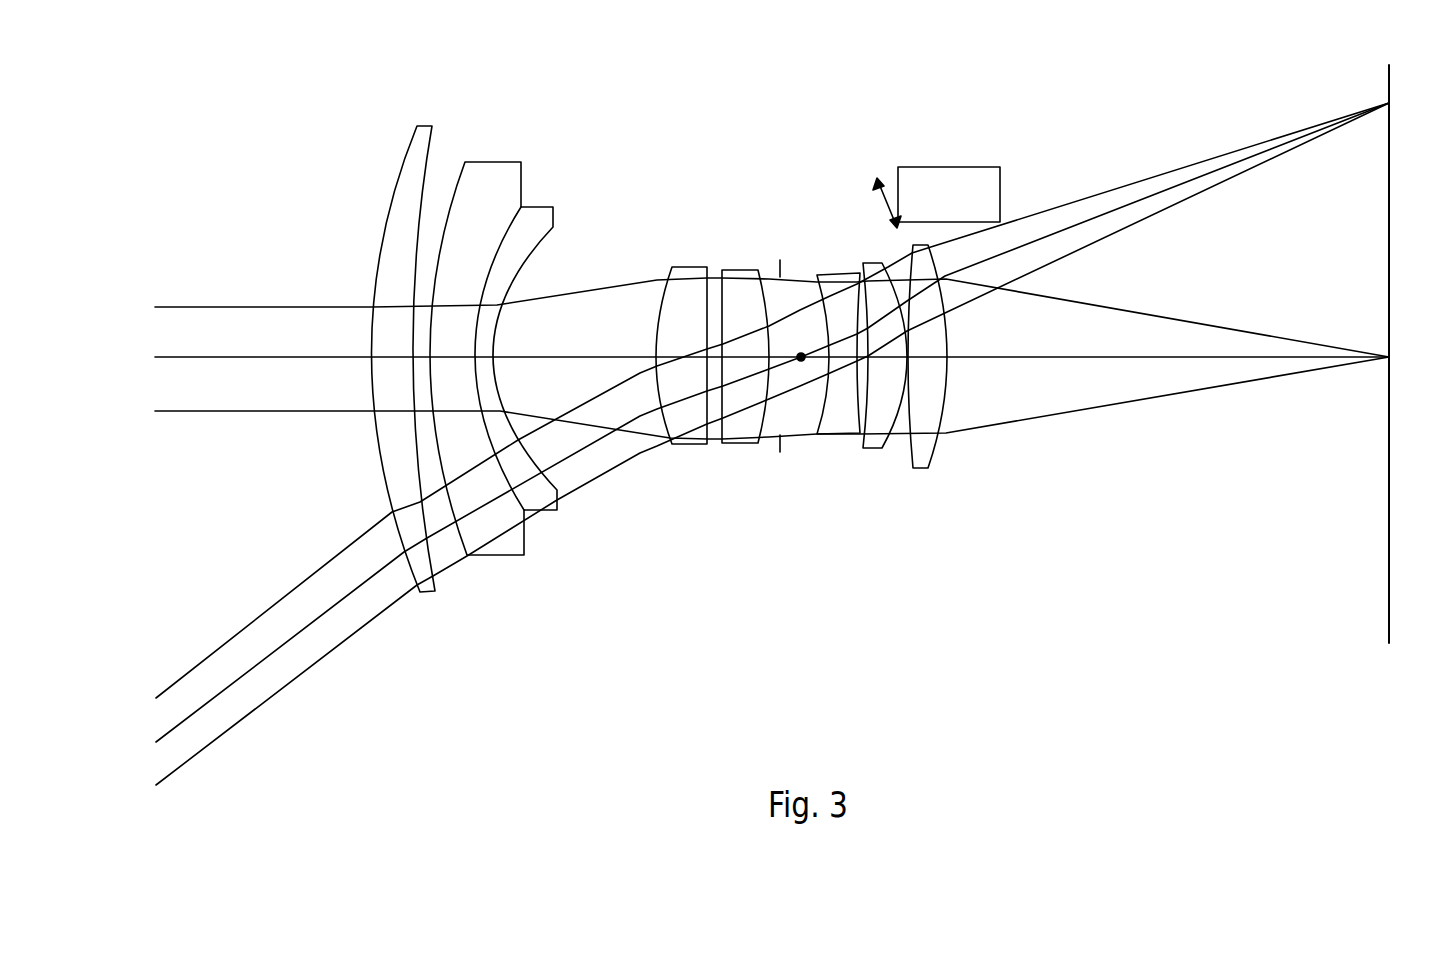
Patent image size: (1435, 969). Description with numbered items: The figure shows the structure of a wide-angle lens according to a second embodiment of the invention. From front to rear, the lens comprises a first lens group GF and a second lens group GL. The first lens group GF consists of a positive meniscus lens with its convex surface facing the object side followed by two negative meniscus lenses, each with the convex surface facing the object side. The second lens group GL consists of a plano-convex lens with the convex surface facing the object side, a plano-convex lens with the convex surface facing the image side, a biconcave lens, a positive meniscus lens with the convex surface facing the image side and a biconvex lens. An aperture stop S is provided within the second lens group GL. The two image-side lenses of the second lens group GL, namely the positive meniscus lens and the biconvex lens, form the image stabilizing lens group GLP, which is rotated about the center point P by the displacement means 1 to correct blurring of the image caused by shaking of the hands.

The displacement means 1 is at (1000, 185).
The first lens group GF is at (477, 320).
The second lens group GL is at (803, 264).
The image stabilizing lens group GLP is at (905, 288).
The aperture stop S is at (780, 452).
The center point P is at (794, 371).